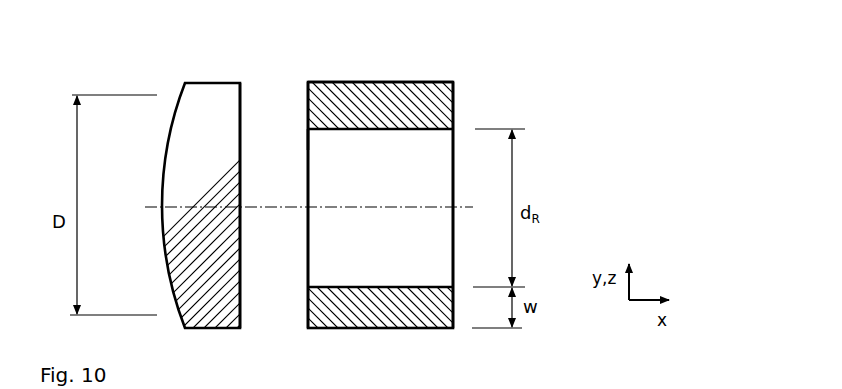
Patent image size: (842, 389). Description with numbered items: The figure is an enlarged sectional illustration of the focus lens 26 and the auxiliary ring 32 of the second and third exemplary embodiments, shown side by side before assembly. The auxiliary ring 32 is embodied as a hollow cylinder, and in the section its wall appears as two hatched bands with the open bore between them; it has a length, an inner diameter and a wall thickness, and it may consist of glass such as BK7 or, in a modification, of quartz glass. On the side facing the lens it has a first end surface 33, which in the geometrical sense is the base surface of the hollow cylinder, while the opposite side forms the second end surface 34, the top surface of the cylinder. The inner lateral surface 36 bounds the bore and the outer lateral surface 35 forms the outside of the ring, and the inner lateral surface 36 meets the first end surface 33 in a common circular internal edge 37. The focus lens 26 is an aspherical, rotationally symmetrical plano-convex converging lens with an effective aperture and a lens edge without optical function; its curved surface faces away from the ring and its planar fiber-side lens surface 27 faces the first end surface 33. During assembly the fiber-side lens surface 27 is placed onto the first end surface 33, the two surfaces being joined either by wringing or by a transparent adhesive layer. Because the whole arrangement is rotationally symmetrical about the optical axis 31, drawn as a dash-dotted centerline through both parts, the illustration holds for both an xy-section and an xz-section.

The focus lens 26 is at (288, 187).
The fiber-side lens surface 27 is at (269, 205).
The optical axis 31 is at (285, 180).
The auxiliary ring 32 is at (380, 187).
The first end surface 33 is at (280, 205).
The second end surface 34 is at (482, 205).
The outer lateral surface 35 is at (380, 61).
The inner lateral surface 36 is at (365, 159).
The internal edge 37 is at (285, 138).